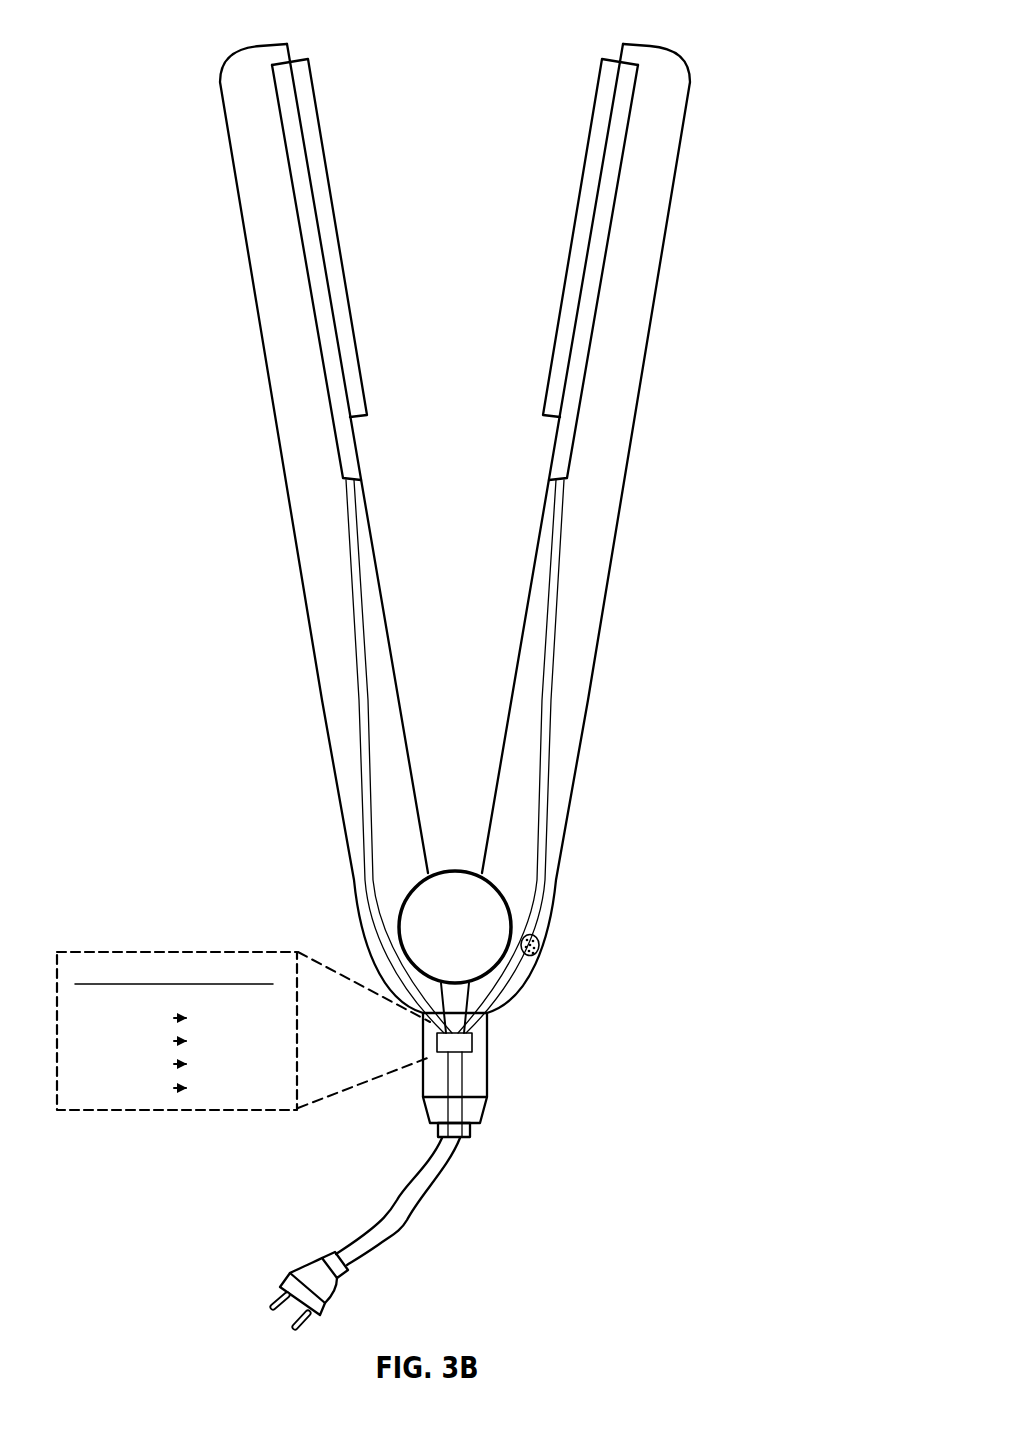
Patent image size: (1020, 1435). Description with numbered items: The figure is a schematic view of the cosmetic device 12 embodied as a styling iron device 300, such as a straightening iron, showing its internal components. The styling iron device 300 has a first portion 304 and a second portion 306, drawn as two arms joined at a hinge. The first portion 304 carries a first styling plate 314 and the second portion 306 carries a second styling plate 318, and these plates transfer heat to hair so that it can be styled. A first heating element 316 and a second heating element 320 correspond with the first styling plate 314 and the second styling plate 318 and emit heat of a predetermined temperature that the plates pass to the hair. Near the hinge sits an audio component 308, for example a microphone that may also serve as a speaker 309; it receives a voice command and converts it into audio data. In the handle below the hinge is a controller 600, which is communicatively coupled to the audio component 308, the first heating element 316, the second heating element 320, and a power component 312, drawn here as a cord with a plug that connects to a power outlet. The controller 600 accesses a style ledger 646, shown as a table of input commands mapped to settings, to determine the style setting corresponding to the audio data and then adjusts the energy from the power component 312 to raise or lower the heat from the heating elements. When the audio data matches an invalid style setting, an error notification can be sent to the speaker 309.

The cosmetic device 12 is at (760, 36).
The styling iron device 300 is at (459, 685).
The first portion 304 is at (628, 421).
The second portion 306 is at (296, 534).
The audio component 308 is at (539, 950).
The speaker 309 is at (530, 945).
The power component 312 is at (320, 1252).
The first styling plate 314 is at (585, 158).
The first heating element 316 is at (585, 357).
The second styling plate 318 is at (336, 220).
The second heating element 320 is at (330, 377).
The controller 600 is at (472, 1042).
The style ledger 646 is at (243, 1031).